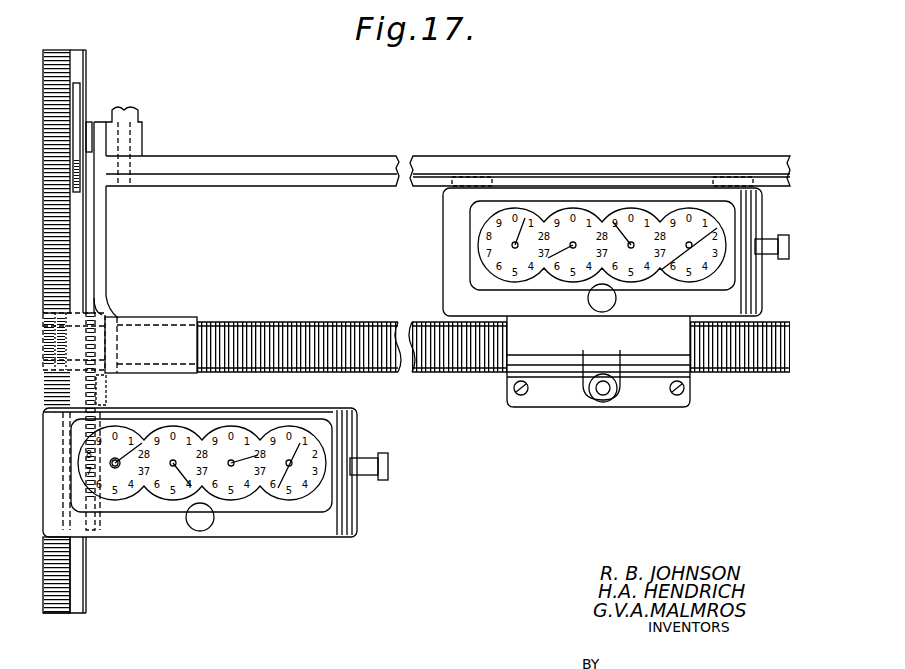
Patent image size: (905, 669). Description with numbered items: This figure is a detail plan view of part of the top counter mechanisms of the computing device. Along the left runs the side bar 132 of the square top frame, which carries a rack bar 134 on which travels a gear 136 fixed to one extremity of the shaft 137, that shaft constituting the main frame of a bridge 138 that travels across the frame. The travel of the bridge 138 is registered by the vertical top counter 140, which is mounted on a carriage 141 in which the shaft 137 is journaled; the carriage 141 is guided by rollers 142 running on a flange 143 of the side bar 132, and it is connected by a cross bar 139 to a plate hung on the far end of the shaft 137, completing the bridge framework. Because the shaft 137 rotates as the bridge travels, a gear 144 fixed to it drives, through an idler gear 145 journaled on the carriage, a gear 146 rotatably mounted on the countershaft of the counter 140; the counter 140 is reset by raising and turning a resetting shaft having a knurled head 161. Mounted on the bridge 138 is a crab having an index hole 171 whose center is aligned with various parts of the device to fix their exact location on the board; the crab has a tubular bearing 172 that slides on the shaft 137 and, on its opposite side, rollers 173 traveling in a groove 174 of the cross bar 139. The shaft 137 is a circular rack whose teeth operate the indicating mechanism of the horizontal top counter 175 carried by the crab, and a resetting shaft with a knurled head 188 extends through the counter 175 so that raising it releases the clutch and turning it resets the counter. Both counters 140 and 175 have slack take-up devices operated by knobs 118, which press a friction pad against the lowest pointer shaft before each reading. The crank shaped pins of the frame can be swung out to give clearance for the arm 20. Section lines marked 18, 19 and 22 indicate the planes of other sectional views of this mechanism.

The plunger 118 is at (390, 470).
The side bar 132 is at (42, 603).
The rack bar 134 is at (60, 76).
The gear 136 is at (48, 352).
The shaft 137 is at (440, 374).
The bridge 138 is at (395, 150).
The cross bar 139 is at (430, 160).
The vertical top counter 140 is at (270, 545).
The carriage 141 is at (100, 270).
The rollers 142 is at (78, 104).
The flange 143 is at (82, 585).
The gear 144 is at (100, 300).
The idler gear 145 is at (94, 400).
The gear 146 is at (90, 466).
The knurled head 161 is at (198, 532).
The index hole 171 is at (603, 402).
The tubular bearing 172 is at (668, 400).
The rollers 173 is at (478, 178).
The groove 174 is at (418, 180).
The horizontal top counter 175 is at (440, 275).
The knurled head 188 is at (588, 300).
The section line 18- 18 is at (20, 512).
The section line 19- 19 is at (378, 86).
The arm 20 is at (410, 300).
The section line 22- 22 is at (787, 116).